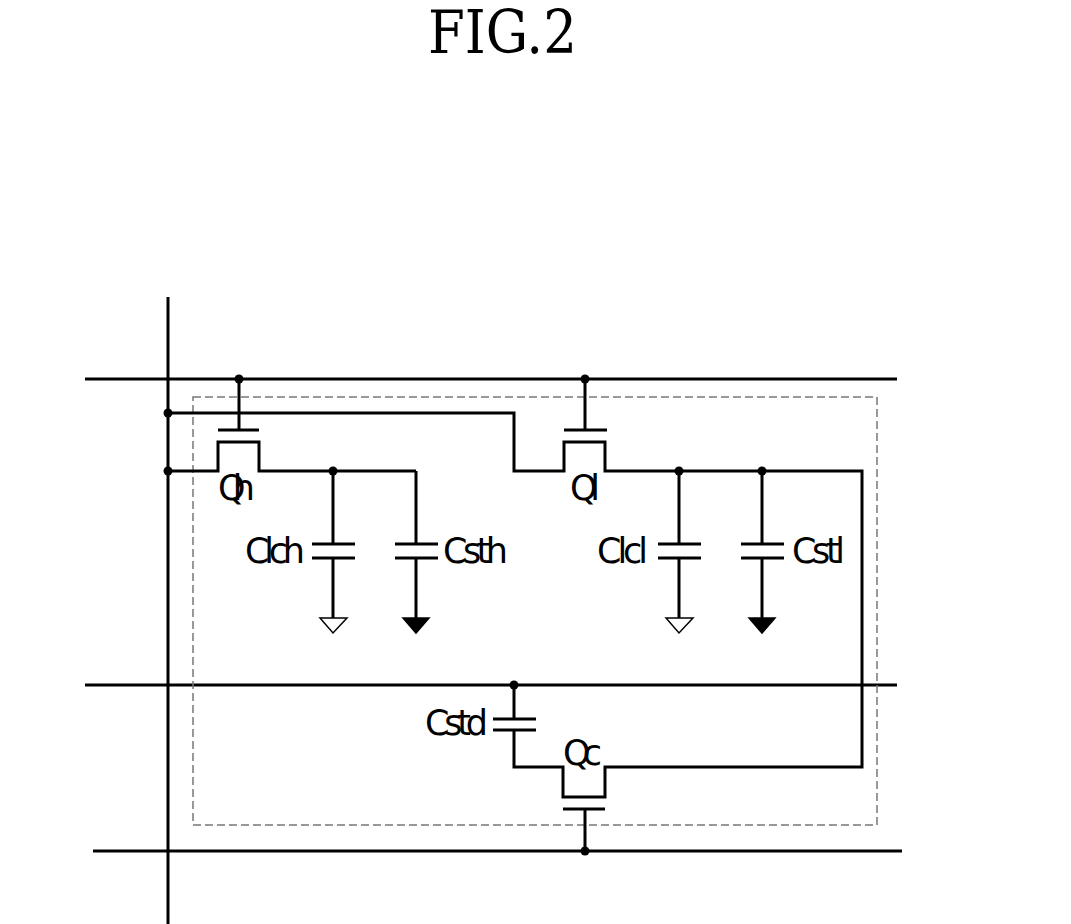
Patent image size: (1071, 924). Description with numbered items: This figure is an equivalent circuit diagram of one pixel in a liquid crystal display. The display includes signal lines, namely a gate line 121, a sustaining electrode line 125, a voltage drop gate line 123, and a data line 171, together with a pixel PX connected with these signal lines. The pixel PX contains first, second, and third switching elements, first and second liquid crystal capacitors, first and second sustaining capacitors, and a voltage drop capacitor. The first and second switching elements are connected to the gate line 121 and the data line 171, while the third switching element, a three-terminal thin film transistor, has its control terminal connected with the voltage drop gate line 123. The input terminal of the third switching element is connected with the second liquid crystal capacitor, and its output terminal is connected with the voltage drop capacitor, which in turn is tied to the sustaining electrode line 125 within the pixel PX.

The data line 171 is at (168, 326).
The gate line 121 is at (518, 380).
The sustaining electrode line 125 is at (518, 686).
The voltage drop gate line 123 is at (527, 851).
The pixel PX is at (378, 397).